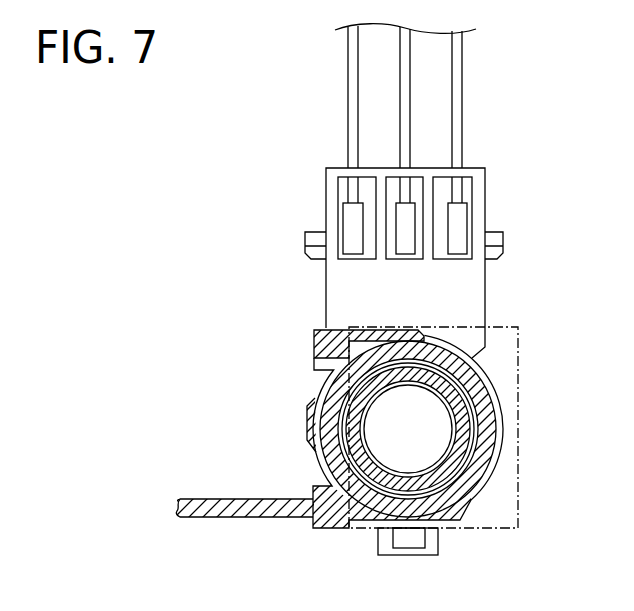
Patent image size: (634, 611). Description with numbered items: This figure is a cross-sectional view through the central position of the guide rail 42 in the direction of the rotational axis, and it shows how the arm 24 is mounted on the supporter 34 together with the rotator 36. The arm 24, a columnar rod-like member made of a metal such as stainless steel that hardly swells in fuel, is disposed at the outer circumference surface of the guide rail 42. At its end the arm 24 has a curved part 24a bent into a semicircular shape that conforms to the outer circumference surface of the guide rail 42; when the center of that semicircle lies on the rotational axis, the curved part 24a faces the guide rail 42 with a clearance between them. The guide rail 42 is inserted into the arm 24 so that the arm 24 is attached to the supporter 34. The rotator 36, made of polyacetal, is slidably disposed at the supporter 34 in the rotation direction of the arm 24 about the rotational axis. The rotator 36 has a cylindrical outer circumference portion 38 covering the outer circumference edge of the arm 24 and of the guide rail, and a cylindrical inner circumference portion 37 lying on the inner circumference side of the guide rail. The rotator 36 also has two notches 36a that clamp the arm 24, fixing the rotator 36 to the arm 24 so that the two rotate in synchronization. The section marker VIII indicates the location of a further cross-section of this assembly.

The supporter 34 is at (478, 300).
The rotator 36 is at (372, 409).
The notches 36a is at (313, 334).
The arm 24 is at (327, 510).
The curved part 24a is at (488, 393).
The inner circumference portion 37 is at (481, 492).
The outer circumference portion 38 is at (478, 364).
The guide rail 42 is at (481, 471).
The section line VIII is at (519, 418).